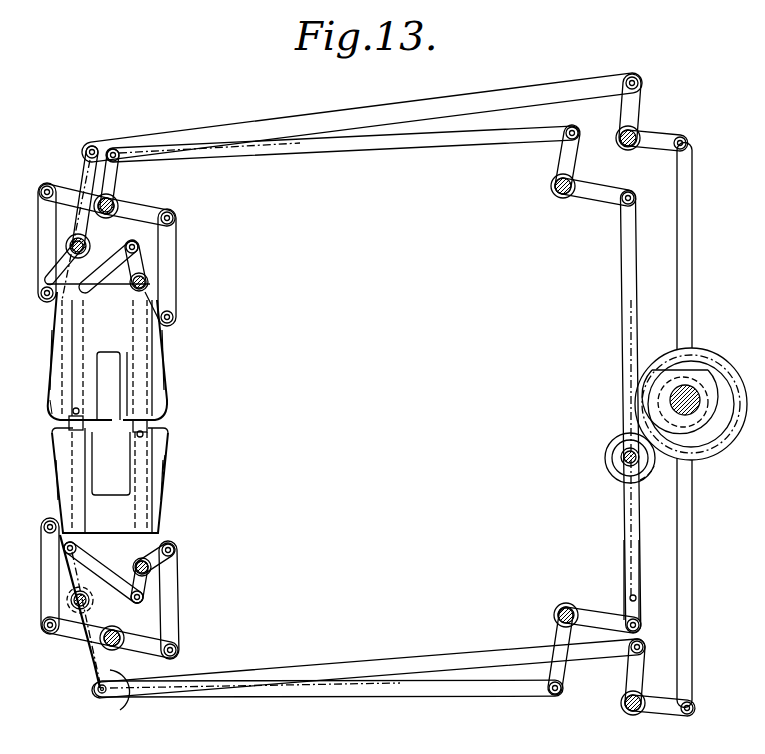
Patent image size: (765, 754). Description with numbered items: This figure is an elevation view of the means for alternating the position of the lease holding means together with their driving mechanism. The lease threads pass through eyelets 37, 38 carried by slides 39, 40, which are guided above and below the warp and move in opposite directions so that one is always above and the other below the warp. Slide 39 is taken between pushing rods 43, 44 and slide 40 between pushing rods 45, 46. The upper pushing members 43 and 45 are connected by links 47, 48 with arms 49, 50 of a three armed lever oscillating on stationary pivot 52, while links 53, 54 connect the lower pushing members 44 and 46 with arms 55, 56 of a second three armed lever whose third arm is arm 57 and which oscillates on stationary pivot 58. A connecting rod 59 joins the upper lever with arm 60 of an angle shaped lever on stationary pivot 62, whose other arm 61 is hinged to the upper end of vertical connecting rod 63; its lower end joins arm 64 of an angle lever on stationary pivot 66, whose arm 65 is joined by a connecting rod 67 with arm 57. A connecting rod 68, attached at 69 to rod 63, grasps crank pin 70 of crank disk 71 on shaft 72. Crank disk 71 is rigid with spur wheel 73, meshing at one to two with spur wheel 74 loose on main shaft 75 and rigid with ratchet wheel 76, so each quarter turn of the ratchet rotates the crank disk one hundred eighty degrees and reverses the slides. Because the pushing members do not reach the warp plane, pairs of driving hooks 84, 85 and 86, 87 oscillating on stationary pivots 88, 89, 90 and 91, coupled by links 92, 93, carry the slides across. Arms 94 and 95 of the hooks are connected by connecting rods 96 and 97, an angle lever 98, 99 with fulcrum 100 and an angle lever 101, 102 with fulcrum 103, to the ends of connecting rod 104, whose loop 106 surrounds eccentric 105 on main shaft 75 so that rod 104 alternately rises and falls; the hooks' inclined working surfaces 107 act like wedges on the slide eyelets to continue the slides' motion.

The eyelet 37 is at (96, 396).
The eyelet 38 is at (134, 440).
The slide 39 is at (84, 410).
The slide 40 is at (136, 435).
The pushing rod 43 is at (70, 358).
The pushing rod 44 is at (70, 496).
The pushing rod 45 is at (145, 352).
The pushing rod 46 is at (158, 489).
The link 47 is at (40, 222).
The link 48 is at (178, 272).
The arm of three armed lever 49 is at (64, 188).
The arm of three armed lever 50 is at (143, 204).
The stationary pivot 52 is at (107, 216).
The link 53 is at (42, 566).
The link 54 is at (178, 590).
The arm of three armed lever 55 is at (66, 634).
The arm of three armed lever 56 is at (143, 648).
The arm of three armed lever 57 is at (124, 700).
The stationary pivot 58 is at (113, 630).
The connecting rod 59 is at (347, 146).
The arm of angle shaped lever 60 is at (571, 158).
The arm of angle shaped lever 61 is at (600, 206).
The stationary pivot 62 is at (550, 188).
The vertical connecting rod 63 is at (624, 274).
The arm of angle lever 64 is at (593, 612).
The arm of angle lever 65 is at (563, 680).
The stationary pivot 66 is at (555, 614).
The connecting rod 67 is at (421, 690).
The connecting rod 68 is at (626, 548).
The connection point 69 is at (636, 598).
The crank pin 70 is at (622, 470).
The crank disk 71 is at (606, 460).
The shaft 72 is at (622, 456).
The spur wheel 73 is at (650, 476).
The spur wheel 74 is at (661, 358).
The main shaft 75 is at (670, 400).
The ratchet wheel 76 is at (660, 418).
The driving hook 84 is at (53, 364).
The driving hook 85 is at (55, 466).
The driving hook 86 is at (167, 385).
The driving hook 87 is at (170, 464).
The stationary pivot 88 is at (66, 250).
The stationary pivot 89 is at (148, 284).
The stationary pivot 90 is at (70, 600).
The stationary pivot 91 is at (152, 565).
The link 92 is at (114, 278).
The link 93 is at (96, 570).
The arm of driving hook 94 is at (82, 162).
The arm of driving hook 95 is at (90, 660).
The connecting rod 96 is at (458, 102).
The connecting rod 97 is at (415, 662).
The arm of angle lever 98 is at (641, 104).
The arm of angle lever 99 is at (652, 146).
The fulcrum 100 is at (642, 136).
The arm of angle lever 101 is at (637, 673).
The arm of angle lever 102 is at (658, 712).
The fulcrum 103 is at (626, 708).
The connecting rod 104 is at (688, 253).
The eccentric 105 is at (702, 455).
The loop 106 is at (728, 440).
The inclined working surface 107 is at (54, 410).